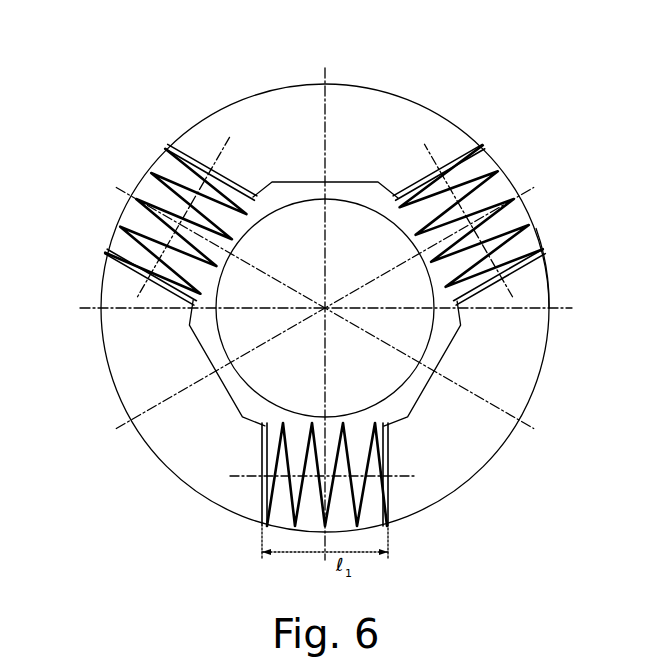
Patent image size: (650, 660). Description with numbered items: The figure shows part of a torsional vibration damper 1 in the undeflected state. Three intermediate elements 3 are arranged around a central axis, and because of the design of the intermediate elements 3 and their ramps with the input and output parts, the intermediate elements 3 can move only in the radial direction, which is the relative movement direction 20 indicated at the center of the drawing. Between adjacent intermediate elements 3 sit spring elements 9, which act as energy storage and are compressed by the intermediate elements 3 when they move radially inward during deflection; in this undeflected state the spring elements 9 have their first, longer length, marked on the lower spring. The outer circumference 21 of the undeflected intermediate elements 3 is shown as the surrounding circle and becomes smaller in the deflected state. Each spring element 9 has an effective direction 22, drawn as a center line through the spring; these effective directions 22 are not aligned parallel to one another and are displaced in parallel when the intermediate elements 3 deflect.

The torsional vibration damper 1 is at (542, 87).
The intermediate elements 3 is at (362, 103).
The spring elements 9 is at (504, 168).
The relative movement direction 20 is at (332, 222).
The outer circumference 21 is at (537, 237).
The effective direction 22 is at (433, 167).